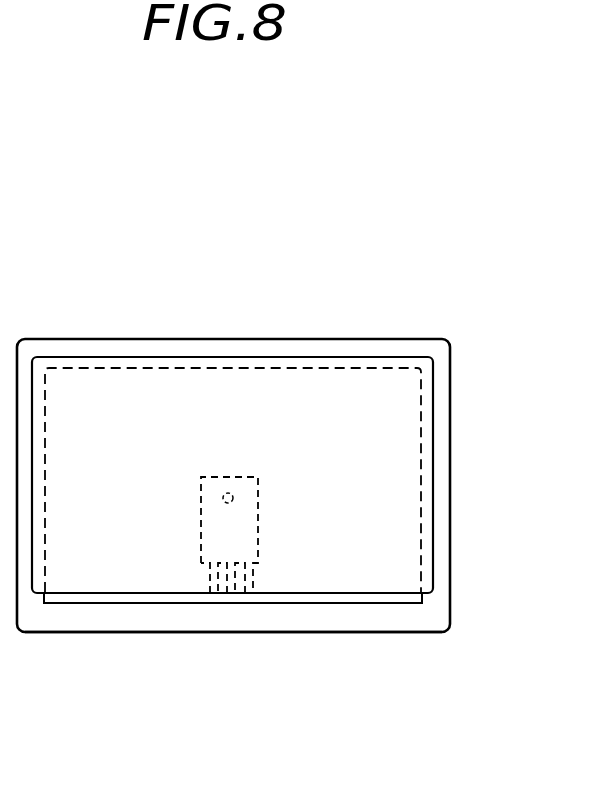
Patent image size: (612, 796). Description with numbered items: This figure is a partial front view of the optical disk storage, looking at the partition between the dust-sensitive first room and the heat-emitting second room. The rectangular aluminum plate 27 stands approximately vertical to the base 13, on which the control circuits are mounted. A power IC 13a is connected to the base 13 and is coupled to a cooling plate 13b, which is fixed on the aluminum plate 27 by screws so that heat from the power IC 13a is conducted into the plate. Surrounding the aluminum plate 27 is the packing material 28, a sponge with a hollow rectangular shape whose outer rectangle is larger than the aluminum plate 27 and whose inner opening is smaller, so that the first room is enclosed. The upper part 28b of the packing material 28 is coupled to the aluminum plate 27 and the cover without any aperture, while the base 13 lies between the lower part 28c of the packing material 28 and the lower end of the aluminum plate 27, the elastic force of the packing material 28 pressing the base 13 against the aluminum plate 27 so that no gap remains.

The base 13 is at (338, 598).
The power IC 13a is at (262, 517).
The cooling plate 13b is at (200, 490).
The aluminum plate 27 is at (172, 375).
The packing material 28 is at (453, 473).
The upper part of the packing material 28b is at (347, 348).
The lower part of the packing material 28c is at (177, 613).